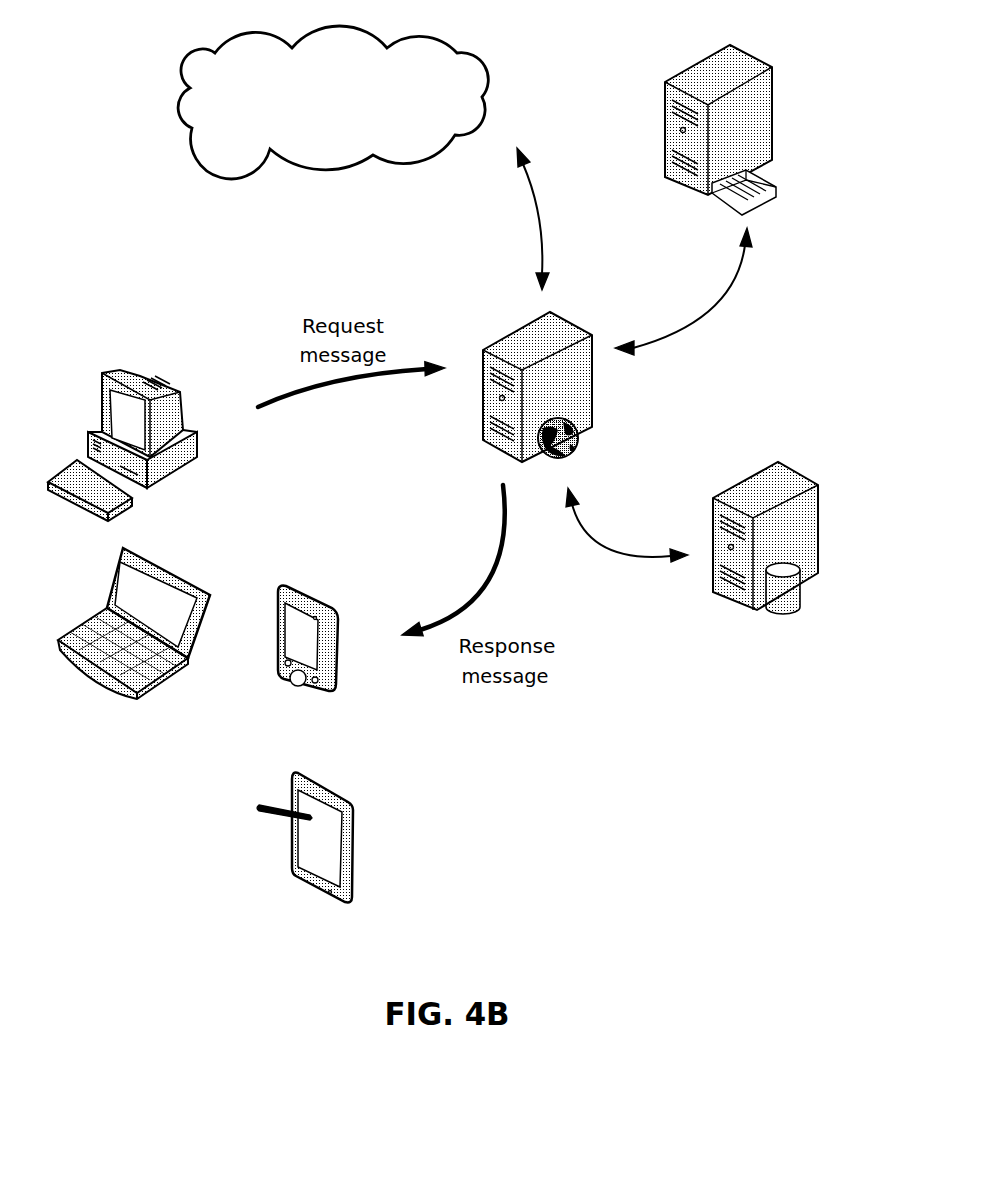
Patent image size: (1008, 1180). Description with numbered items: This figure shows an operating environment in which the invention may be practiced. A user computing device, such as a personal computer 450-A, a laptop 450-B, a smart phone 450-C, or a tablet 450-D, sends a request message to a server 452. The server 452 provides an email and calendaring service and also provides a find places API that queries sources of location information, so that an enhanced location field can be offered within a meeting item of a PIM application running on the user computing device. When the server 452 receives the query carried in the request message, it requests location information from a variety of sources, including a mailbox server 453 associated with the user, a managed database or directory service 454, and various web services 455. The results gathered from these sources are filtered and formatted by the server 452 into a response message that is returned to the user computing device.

The web services 455 is at (442, 38).
The managed database or directory service 454 is at (703, 58).
The server 452 is at (510, 332).
The mailbox server 453 is at (782, 457).
The desktop computer client 450-A is at (183, 398).
The laptop computer client 450-B is at (170, 680).
The tablet computer client 450-C is at (325, 782).
The handheld device client 450-D is at (318, 695).